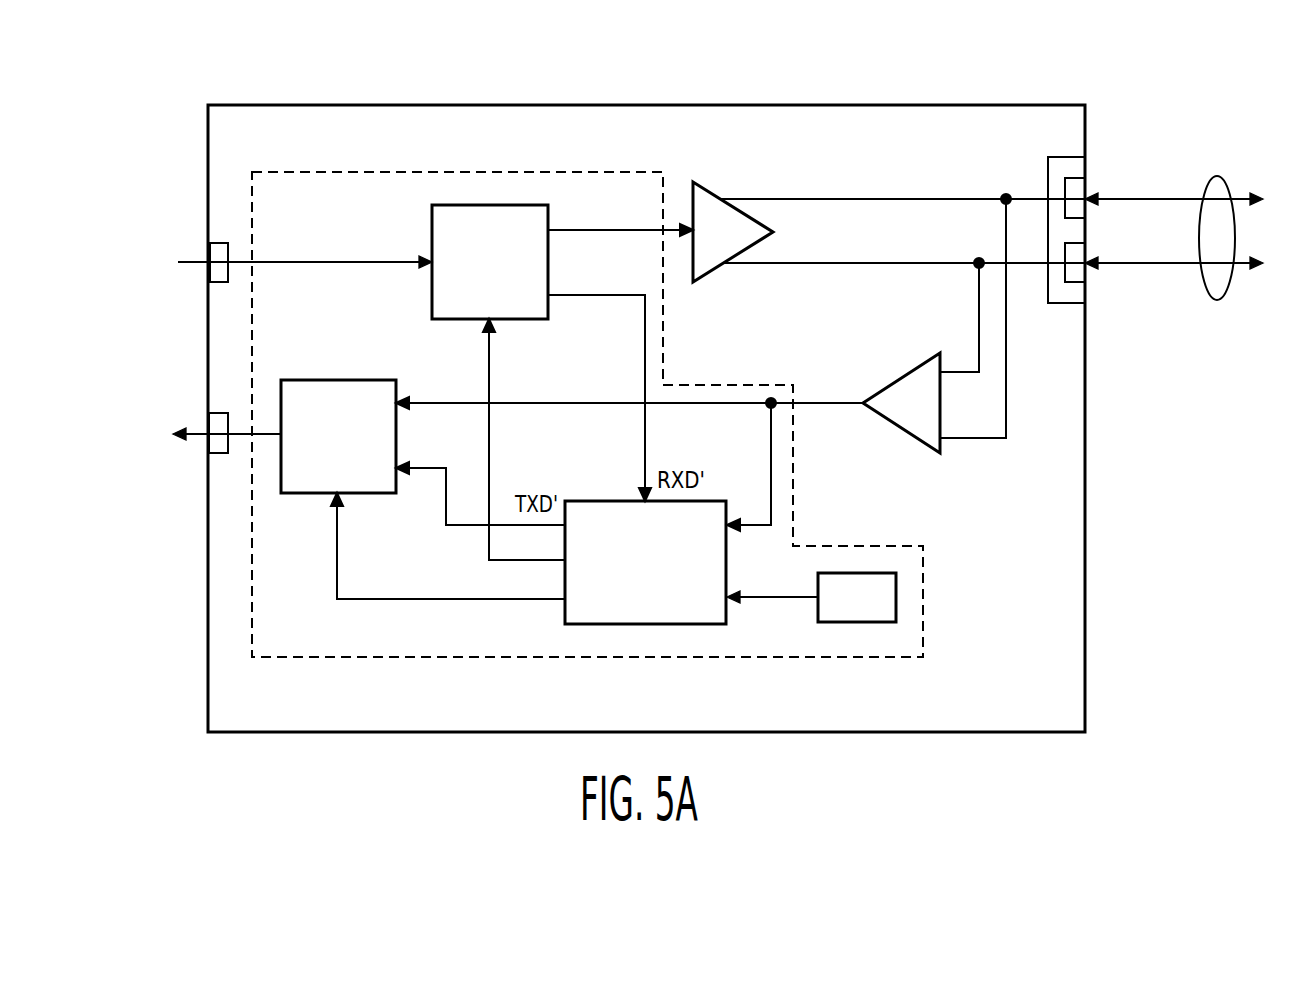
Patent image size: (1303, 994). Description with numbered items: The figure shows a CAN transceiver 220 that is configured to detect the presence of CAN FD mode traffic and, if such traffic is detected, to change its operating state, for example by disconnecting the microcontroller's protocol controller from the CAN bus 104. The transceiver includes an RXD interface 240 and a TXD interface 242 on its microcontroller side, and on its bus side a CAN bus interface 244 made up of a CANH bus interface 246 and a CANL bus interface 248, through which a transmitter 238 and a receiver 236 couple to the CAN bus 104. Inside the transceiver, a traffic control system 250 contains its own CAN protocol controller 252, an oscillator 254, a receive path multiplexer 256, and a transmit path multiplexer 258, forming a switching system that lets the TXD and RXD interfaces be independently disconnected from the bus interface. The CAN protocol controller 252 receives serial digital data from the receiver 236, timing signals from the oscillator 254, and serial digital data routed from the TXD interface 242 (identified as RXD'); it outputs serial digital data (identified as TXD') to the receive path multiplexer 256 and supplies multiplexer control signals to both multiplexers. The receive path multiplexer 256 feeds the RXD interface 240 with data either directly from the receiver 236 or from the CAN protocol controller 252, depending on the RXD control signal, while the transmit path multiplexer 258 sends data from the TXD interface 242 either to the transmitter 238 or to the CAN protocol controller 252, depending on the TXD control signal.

The CAN bus 104 is at (1215, 178).
The CAN transceiver 220 is at (392, 105).
The receiver 236 is at (897, 425).
The transmitter 238 is at (726, 272).
The RXD interface 240 is at (217, 453).
The TXD interface 242 is at (218, 243).
The CAN bus interface 244 is at (1065, 157).
The CANH bus interface 246 is at (1065, 190).
The CANL bus interface 248 is at (1075, 283).
The traffic control system 250 is at (325, 172).
The CAN protocol controller 252 is at (595, 501).
The oscillator 254 is at (818, 607).
The receive path multiplexer 256 is at (329, 380).
The transmit path multiplexer 258 is at (432, 238).